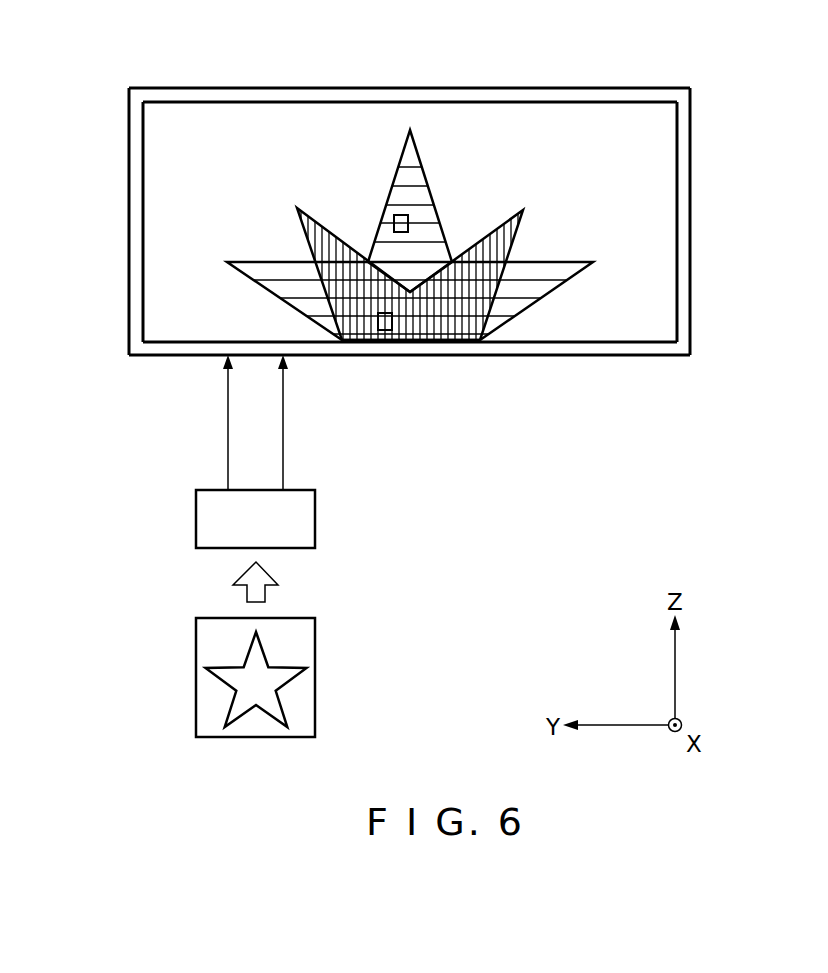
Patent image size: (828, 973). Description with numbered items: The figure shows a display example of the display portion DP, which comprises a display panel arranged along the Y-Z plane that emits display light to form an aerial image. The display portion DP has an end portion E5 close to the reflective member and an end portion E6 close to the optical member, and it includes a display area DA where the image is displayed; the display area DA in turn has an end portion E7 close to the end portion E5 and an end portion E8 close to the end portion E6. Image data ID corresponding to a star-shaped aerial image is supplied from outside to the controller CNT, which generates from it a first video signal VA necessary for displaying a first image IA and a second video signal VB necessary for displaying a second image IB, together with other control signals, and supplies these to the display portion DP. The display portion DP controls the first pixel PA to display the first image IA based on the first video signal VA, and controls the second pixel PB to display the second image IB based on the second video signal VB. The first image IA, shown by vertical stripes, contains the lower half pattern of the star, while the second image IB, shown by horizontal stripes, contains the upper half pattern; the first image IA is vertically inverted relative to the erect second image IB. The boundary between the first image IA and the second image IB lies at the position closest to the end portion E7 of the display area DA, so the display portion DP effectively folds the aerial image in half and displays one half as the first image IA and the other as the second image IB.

The display portion DP is at (366, 230).
The display area DA is at (410, 229).
The end portion E5 is at (575, 356).
The end portion E6 is at (516, 87).
The end portion E7 is at (640, 343).
The end portion E8 is at (582, 102).
The first image IA is at (538, 216).
The second image IB is at (573, 250).
The first pixel PA is at (385, 330).
The second pixel PB is at (399, 224).
The first video signal VA is at (226, 428).
The second video signal VB is at (285, 428).
The controller CNT is at (255, 519).
The image data ID is at (316, 648).